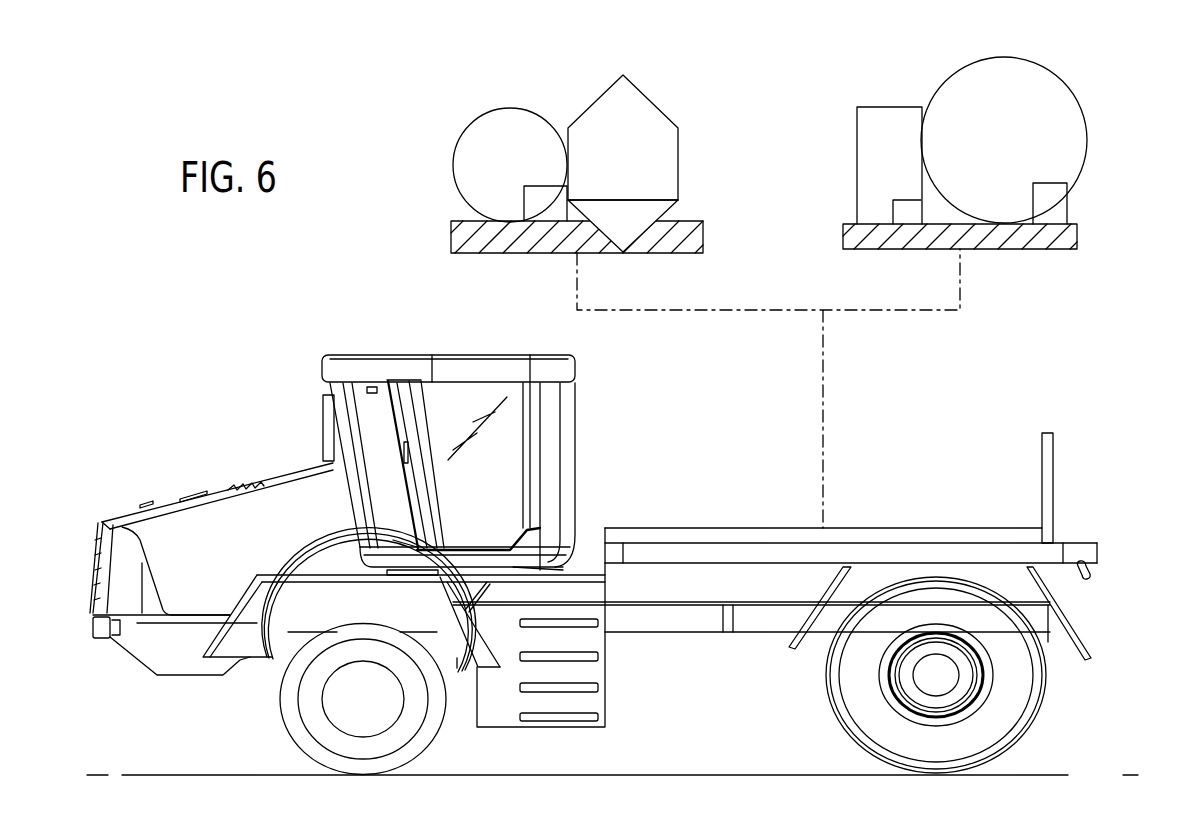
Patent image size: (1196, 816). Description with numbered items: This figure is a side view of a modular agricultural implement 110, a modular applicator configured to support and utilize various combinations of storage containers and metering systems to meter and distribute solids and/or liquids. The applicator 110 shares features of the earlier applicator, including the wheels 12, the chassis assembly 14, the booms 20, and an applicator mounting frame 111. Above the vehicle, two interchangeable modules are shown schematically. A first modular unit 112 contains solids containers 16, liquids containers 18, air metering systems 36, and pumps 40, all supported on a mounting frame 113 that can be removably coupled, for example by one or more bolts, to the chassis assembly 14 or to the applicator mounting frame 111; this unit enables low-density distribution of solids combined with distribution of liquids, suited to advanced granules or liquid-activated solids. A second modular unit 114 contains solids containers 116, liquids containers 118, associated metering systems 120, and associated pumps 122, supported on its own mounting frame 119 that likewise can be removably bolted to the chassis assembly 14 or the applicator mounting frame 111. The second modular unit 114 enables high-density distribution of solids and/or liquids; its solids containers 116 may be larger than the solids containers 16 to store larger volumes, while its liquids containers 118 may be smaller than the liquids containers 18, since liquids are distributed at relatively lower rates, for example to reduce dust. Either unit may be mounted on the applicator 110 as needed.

The modular agricultural implement 110 is at (401, 320).
The wheels 12 is at (441, 730).
The chassis assembly 14 is at (657, 633).
The booms 20 is at (1097, 565).
The applicator mounting frame 111 is at (917, 527).
The first modular unit 112 is at (675, 64).
The liquids containers 18 is at (509, 108).
The solids containers 16 is at (652, 98).
The air metering systems 36 is at (621, 199).
The pumps 40 is at (542, 185).
The mounting frame 113 is at (653, 255).
The second modular unit 114 is at (1062, 65).
The solids containers 116 is at (1085, 114).
The liquids containers 118 is at (857, 165).
The metering systems 120 is at (1053, 183).
The pumps 122 is at (907, 200).
The mounting frame 119 is at (997, 250).